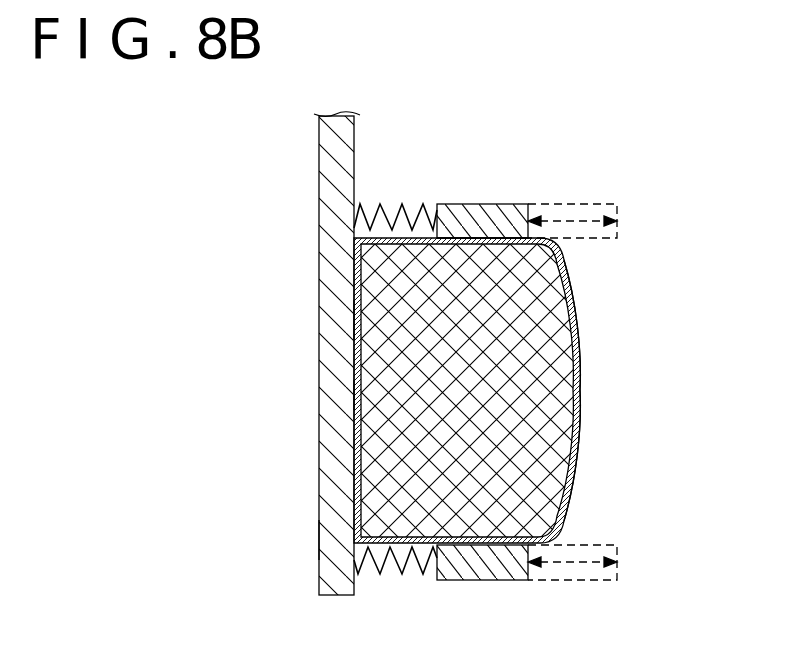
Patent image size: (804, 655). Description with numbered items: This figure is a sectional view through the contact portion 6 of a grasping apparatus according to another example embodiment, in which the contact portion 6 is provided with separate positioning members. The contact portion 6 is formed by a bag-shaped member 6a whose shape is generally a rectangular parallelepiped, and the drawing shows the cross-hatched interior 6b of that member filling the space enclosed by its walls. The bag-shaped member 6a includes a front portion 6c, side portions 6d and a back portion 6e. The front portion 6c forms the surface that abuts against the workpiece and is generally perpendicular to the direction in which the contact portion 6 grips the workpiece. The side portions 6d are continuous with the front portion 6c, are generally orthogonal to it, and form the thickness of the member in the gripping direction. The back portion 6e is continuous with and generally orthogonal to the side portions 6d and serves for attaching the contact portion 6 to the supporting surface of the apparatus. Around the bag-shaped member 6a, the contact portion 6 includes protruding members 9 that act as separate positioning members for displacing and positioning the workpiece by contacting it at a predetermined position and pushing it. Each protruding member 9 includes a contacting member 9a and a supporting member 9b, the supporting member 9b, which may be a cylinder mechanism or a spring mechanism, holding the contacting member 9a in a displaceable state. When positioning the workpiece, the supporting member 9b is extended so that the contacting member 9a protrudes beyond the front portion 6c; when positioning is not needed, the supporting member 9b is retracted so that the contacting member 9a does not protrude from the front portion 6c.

The contact portion 6 is at (489, 392).
The bag-shaped member 6a is at (575, 297).
The cushion core 6b is at (535, 351).
The front portion 6c is at (573, 388).
The side portions 6d is at (481, 237).
The back portion 6e is at (355, 395).
The protruding member 9 is at (485, 365).
The contacting member 9a is at (523, 204).
The supporting member 9b is at (400, 203).